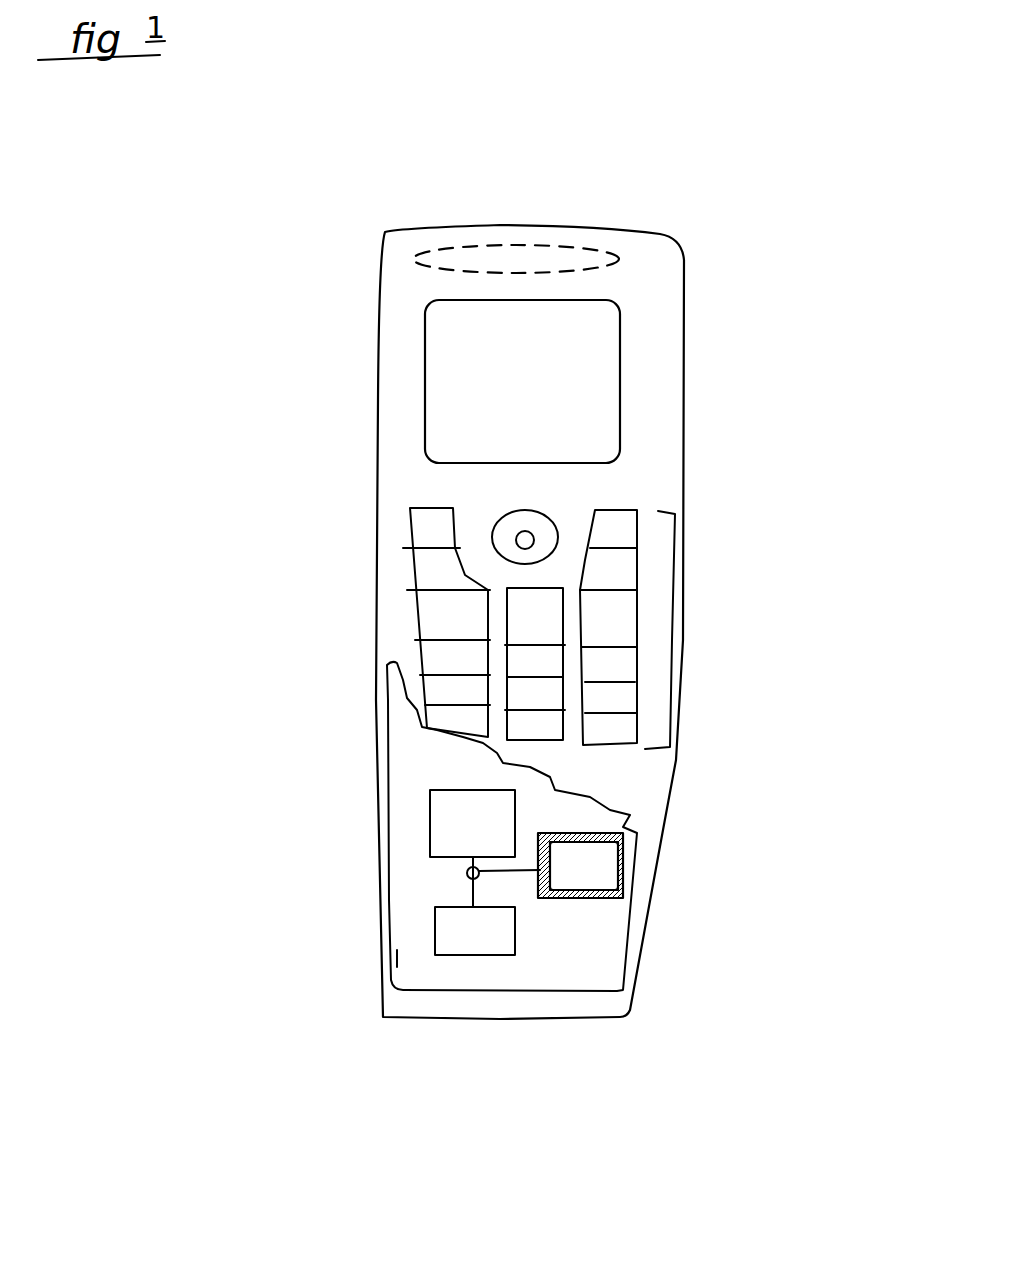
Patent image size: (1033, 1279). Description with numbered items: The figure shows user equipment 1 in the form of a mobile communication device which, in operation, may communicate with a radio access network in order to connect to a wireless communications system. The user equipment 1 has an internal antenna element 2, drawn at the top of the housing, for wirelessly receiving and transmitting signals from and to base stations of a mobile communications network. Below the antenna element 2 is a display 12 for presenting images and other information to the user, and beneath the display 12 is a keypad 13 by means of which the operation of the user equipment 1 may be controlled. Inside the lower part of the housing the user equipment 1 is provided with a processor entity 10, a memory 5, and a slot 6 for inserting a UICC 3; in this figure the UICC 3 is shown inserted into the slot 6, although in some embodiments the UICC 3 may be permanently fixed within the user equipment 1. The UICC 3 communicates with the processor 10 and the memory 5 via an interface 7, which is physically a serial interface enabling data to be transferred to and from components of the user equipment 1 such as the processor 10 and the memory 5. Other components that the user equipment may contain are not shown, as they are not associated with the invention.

The user equipment 1 is at (392, 268).
The internal antenna element 2 is at (610, 253).
The display 12 is at (623, 415).
The keypad 13 is at (665, 629).
The processor entity 10 is at (430, 821).
The memory 5 is at (472, 955).
The slot 6 is at (623, 862).
The UICC 3 is at (607, 877).
The interface 7 is at (518, 872).